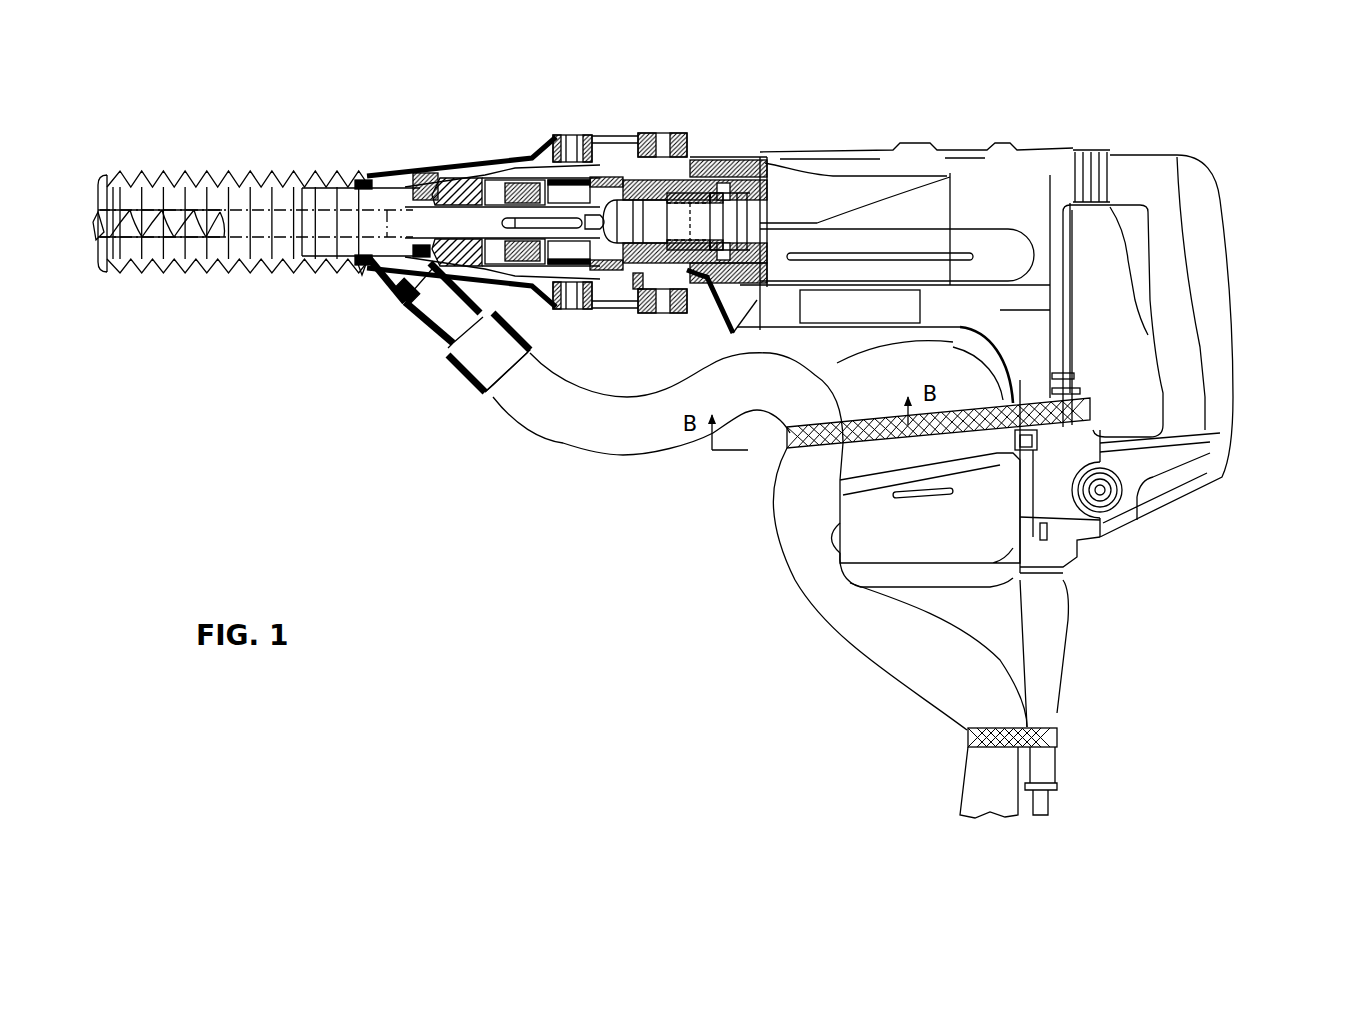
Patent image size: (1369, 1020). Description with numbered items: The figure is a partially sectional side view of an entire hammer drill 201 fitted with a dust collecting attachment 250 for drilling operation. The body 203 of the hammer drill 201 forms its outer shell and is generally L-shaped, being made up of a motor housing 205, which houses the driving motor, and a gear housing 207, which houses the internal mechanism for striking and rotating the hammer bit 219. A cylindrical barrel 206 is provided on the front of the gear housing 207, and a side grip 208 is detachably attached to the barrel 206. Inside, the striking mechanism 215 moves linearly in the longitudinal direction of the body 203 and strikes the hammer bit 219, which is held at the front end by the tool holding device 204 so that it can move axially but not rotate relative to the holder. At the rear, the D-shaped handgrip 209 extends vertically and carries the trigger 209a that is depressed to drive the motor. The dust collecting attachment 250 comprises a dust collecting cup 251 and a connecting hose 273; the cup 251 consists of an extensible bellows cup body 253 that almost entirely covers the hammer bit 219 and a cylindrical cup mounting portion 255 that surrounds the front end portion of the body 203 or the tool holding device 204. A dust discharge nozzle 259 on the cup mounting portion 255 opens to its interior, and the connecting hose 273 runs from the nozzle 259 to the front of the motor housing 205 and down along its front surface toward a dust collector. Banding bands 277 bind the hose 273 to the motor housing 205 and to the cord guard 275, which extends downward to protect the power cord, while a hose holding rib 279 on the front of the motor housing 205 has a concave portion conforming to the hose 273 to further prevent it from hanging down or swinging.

The hammer drill 201 is at (1228, 135).
The body 203 is at (850, 147).
The tool holding device 204 is at (523, 170).
The motor housing 205 is at (873, 557).
The barrel 206 is at (693, 160).
The gear housing 207 is at (903, 177).
The side grip 208 is at (640, 133).
The handgrip 209 is at (1220, 230).
The trigger 209a is at (1128, 212).
The striking mechanism 215 is at (733, 203).
The hammer bit 219 is at (167, 207).
The dust collecting attachment 250 is at (365, 292).
The dust collecting cup 251 is at (227, 170).
The cup body 253 is at (290, 170).
The cup mounting portion 255 is at (440, 163).
The dust discharge nozzle 259 is at (415, 317).
The connecting hose 273 is at (577, 440).
The cord guard 275 is at (1053, 625).
The banding bands 277 is at (767, 437).
The hose holding rib 279 is at (827, 547).